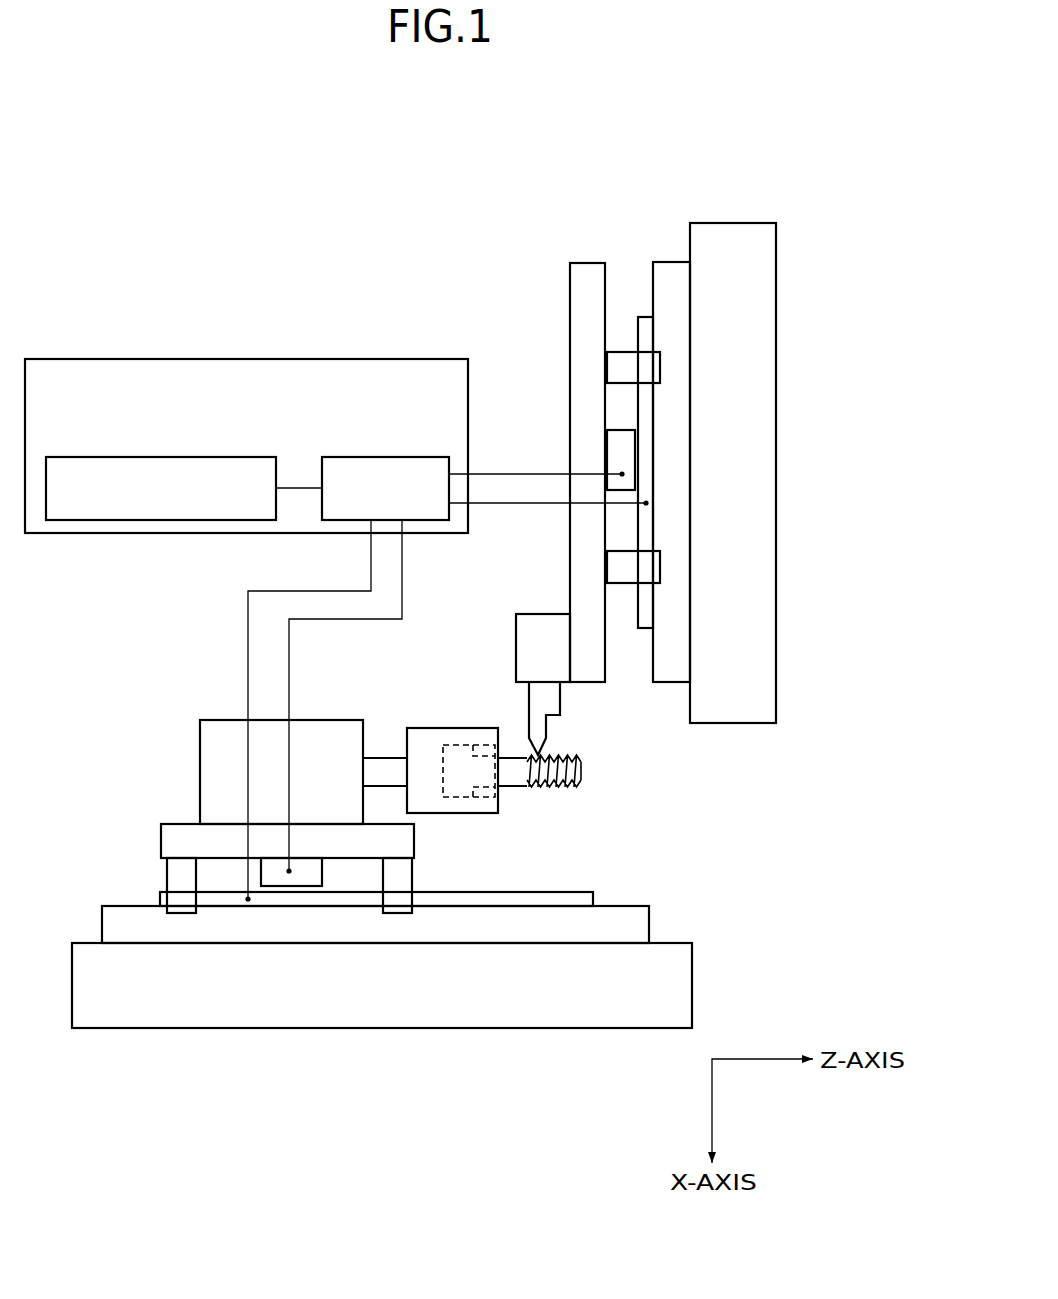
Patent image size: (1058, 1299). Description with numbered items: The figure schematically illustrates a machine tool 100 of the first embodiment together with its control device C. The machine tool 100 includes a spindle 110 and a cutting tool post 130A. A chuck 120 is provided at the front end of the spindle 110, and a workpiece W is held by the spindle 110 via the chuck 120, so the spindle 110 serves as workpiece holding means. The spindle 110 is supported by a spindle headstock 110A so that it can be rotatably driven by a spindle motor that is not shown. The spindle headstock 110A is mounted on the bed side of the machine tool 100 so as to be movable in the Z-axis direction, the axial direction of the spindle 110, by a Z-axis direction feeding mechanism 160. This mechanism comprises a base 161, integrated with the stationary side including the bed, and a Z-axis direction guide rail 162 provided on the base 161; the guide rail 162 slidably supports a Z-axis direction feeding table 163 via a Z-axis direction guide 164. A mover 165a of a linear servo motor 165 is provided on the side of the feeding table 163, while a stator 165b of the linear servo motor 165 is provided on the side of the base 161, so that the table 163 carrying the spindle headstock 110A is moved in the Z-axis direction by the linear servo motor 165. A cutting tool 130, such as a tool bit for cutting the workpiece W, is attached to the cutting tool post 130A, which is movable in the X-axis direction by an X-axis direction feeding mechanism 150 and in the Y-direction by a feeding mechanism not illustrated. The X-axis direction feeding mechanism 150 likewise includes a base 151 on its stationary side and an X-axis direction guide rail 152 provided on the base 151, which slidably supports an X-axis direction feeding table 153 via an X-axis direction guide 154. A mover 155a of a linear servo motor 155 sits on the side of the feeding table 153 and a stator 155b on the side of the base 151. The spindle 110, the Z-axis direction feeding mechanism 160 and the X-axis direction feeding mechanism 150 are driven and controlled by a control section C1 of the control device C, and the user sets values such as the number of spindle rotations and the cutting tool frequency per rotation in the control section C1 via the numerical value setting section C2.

The machine tool 100 is at (197, 250).
The control device C is at (302, 357).
The control section C1 is at (393, 456).
The numerical value setting section C2 is at (203, 456).
The spindle 110 is at (383, 768).
The spindle headstock 110A is at (212, 733).
The chuck 120 is at (452, 740).
The workpiece W is at (530, 791).
The cutting tool 130 is at (546, 727).
The cutting tool post 130A is at (542, 630).
The X-axis direction feeding mechanism 150 is at (772, 134).
The base 151 is at (747, 233).
The X-axis direction guide rail 152 is at (670, 277).
The X-axis direction feeding table 153 is at (583, 334).
The X-axis direction guide 154 is at (623, 365).
The linear servo motor 155 is at (857, 320).
The mover 155a is at (622, 441).
The stator 155b is at (646, 468).
The Z-axis direction feeding mechanism 160 is at (148, 1095).
The base 161 is at (545, 1007).
The Z-axis direction guide rail 162 is at (640, 923).
The Z-axis direction feeding table 163 is at (185, 832).
The Z-axis direction guide 164 is at (178, 882).
The linear servo motor 165 is at (268, 1075).
The mover 165a is at (300, 887).
The stator 165b is at (362, 906).